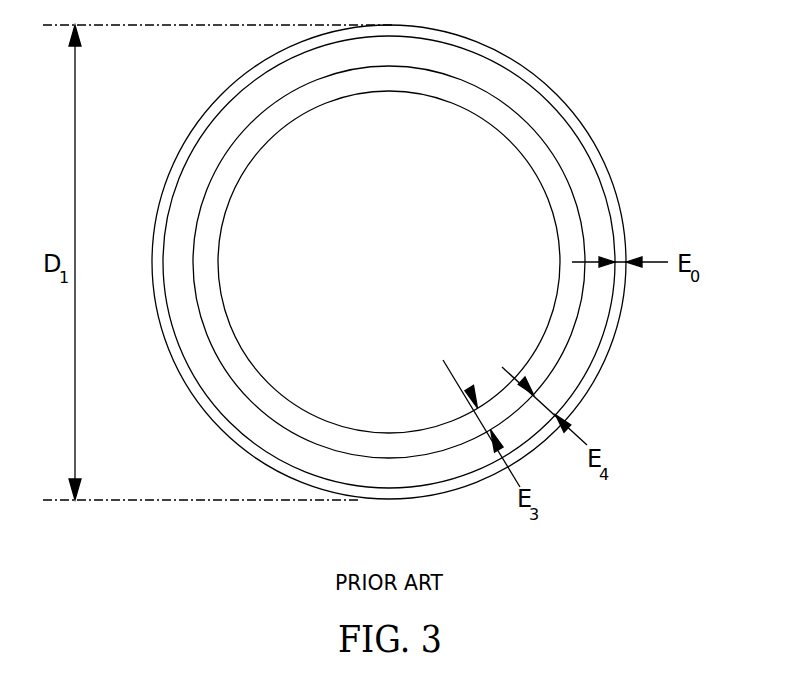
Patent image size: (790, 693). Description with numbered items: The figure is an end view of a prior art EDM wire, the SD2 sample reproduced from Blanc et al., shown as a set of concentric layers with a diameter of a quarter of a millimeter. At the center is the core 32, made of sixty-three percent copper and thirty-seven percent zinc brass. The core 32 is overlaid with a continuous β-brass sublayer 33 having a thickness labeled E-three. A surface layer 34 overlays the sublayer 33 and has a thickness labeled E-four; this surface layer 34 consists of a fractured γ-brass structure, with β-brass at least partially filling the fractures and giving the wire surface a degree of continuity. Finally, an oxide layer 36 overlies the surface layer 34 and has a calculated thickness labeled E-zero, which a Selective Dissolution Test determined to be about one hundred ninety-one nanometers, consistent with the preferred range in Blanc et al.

The core 32 is at (262, 290).
The β-brass sublayer 33 is at (212, 230).
The surface layer 34 is at (197, 177).
The oxide layer 36 is at (200, 130).